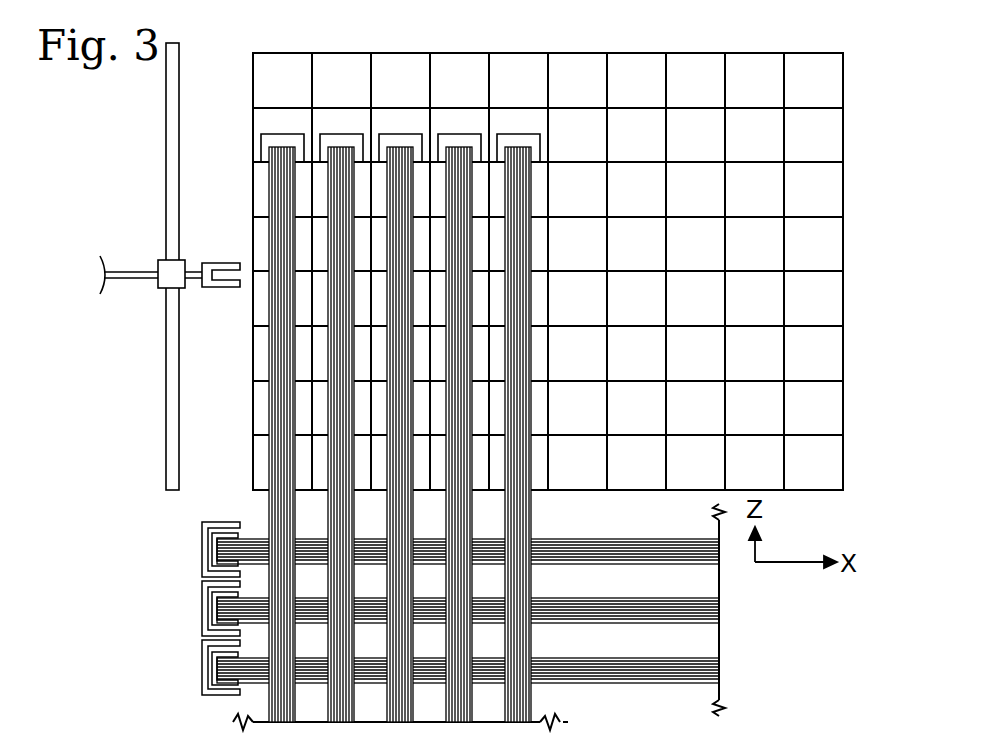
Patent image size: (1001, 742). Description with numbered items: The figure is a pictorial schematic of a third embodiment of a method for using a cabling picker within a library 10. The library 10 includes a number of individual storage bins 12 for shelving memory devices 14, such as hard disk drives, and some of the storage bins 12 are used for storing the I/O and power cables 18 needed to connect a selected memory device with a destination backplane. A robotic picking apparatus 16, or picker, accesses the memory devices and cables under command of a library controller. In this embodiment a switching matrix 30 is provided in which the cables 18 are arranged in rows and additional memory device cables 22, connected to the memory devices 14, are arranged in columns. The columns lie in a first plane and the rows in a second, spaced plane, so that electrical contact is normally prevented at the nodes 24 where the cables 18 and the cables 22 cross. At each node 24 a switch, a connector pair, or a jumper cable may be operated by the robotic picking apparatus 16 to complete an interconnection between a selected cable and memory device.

The library 10 is at (853, 79).
The storage bins 12 is at (815, 400).
The memory devices 14 is at (447, 103).
The robotic picking apparatus 16 is at (162, 370).
The cables 18 is at (257, 536).
The memory device cables 22 is at (537, 691).
The nodes 24 is at (532, 597).
The switching matrix 30 is at (542, 528).